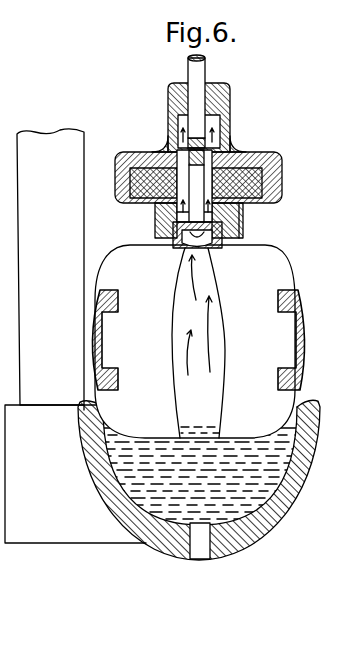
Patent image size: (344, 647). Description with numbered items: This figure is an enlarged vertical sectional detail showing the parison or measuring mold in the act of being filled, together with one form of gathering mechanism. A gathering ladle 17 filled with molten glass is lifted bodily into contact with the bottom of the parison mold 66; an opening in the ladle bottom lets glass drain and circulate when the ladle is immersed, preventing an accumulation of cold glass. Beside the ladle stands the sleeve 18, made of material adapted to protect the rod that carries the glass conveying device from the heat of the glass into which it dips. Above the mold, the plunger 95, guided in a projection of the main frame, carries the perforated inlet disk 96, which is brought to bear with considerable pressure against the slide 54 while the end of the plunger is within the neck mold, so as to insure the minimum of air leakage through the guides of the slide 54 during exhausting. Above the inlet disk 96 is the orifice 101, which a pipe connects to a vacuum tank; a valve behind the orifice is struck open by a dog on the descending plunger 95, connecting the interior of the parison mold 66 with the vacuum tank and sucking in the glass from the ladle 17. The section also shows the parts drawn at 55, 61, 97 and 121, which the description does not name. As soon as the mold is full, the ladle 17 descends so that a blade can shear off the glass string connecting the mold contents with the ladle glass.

The gathering ladle 17 is at (267, 528).
The sleeve 18 is at (75, 336).
The slide 54 is at (243, 206).
The valve body part 55 is at (158, 219).
The bracket / clamp 61 is at (307, 343).
The parison mold 66 is at (195, 341).
The plunger 95 is at (201, 68).
The perforated inlet disk 96 is at (224, 158).
The packing 97 is at (176, 235).
The orifice 101 is at (187, 132).
The outlet hole 121 is at (201, 550).